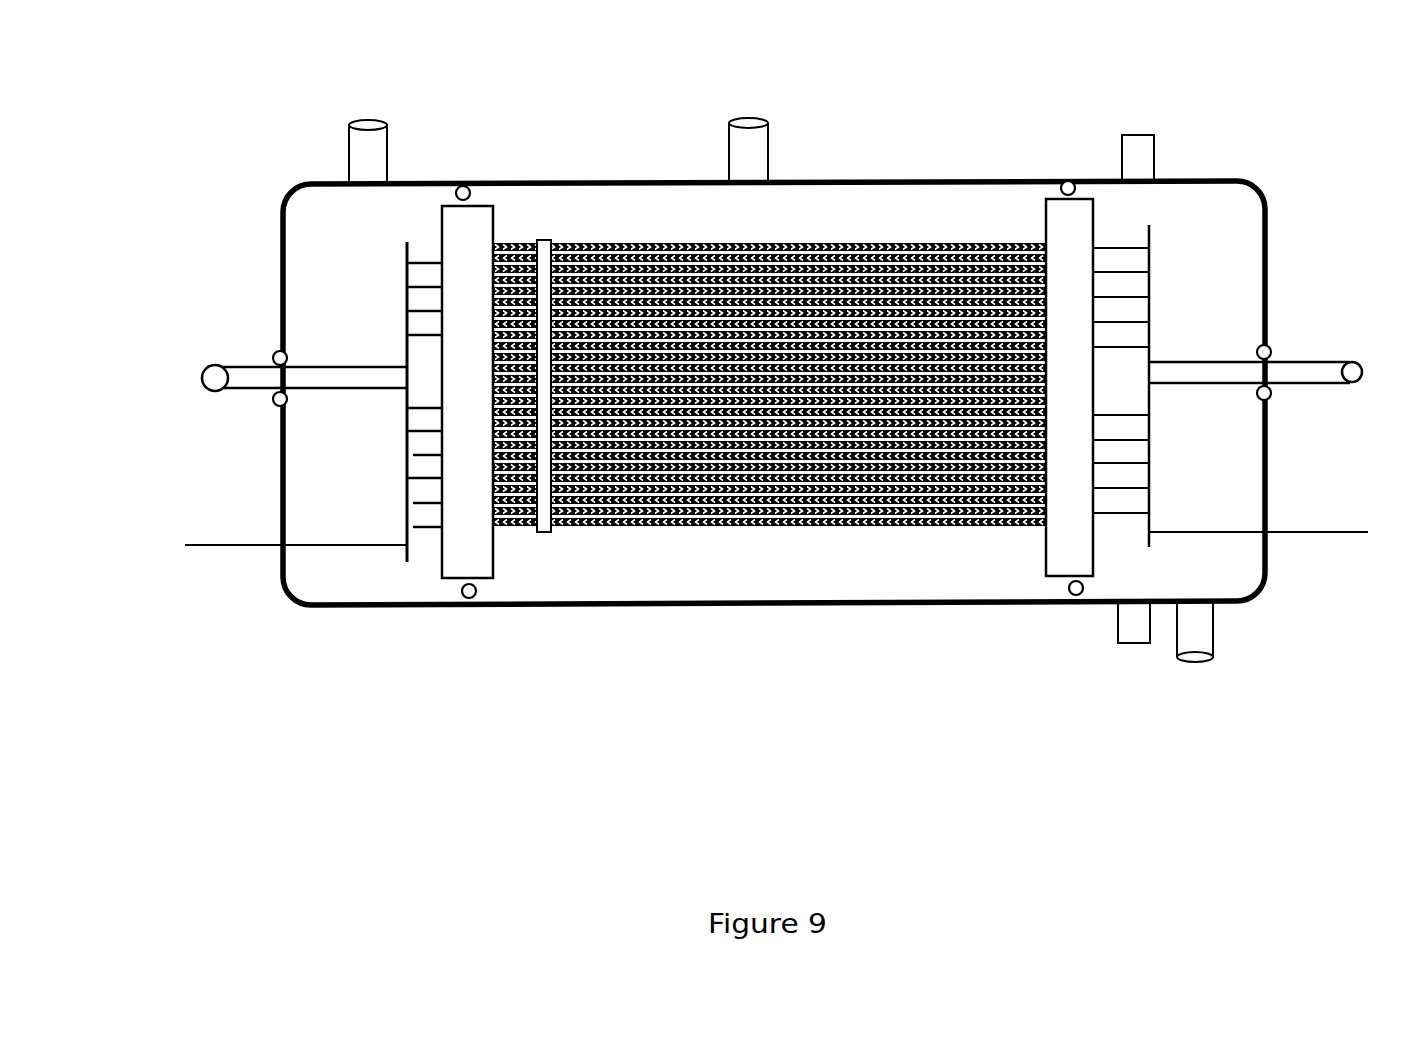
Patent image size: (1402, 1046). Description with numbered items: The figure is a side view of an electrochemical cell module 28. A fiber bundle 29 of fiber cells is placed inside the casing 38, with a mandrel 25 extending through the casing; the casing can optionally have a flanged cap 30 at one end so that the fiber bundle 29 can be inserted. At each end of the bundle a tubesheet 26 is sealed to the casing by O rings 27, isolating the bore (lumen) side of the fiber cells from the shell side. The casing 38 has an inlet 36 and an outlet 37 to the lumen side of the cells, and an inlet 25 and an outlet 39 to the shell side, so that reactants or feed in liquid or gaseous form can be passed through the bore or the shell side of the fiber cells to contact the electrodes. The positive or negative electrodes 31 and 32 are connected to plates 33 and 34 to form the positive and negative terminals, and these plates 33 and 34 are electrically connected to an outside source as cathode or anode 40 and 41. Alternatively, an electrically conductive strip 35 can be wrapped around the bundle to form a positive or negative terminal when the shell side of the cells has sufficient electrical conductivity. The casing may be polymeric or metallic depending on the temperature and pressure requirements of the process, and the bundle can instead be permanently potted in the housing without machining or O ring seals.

The mandrel 25 is at (200, 380).
The tubesheet 26 is at (1043, 550).
The O rings 27 is at (273, 398).
The electrochemical cell module 28 is at (560, 697).
The fiber bundle 29 is at (690, 530).
The flanged cap 30 is at (1122, 133).
The electrode 31 is at (1117, 247).
The electrode 32 is at (433, 530).
The plate 33 is at (405, 297).
The plate 34 is at (1153, 282).
The electrically conductive strip 35 is at (541, 240).
The inlet 36 is at (387, 123).
The outlet 37 is at (1215, 633).
The casing 38 is at (830, 605).
The outlet 39 is at (769, 127).
The cathode or anode connection 40 is at (232, 545).
The cathode or anode connection 41 is at (1340, 533).